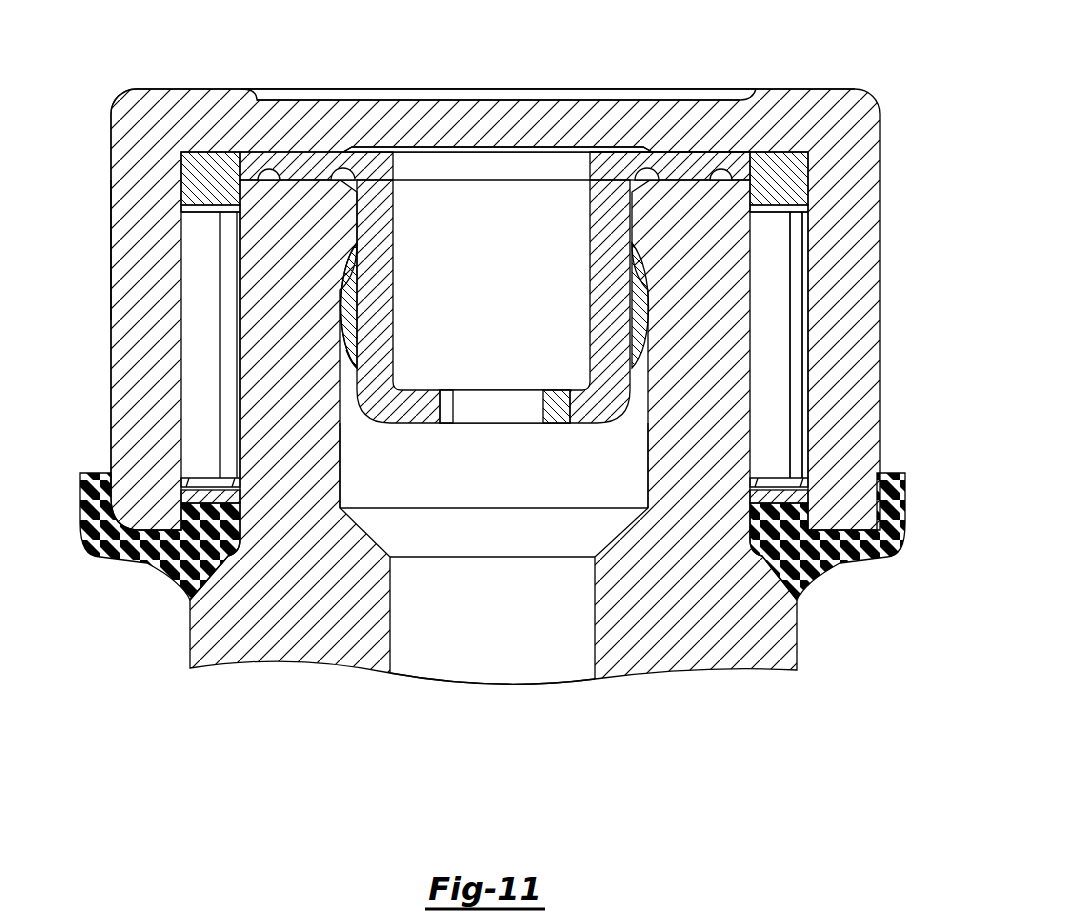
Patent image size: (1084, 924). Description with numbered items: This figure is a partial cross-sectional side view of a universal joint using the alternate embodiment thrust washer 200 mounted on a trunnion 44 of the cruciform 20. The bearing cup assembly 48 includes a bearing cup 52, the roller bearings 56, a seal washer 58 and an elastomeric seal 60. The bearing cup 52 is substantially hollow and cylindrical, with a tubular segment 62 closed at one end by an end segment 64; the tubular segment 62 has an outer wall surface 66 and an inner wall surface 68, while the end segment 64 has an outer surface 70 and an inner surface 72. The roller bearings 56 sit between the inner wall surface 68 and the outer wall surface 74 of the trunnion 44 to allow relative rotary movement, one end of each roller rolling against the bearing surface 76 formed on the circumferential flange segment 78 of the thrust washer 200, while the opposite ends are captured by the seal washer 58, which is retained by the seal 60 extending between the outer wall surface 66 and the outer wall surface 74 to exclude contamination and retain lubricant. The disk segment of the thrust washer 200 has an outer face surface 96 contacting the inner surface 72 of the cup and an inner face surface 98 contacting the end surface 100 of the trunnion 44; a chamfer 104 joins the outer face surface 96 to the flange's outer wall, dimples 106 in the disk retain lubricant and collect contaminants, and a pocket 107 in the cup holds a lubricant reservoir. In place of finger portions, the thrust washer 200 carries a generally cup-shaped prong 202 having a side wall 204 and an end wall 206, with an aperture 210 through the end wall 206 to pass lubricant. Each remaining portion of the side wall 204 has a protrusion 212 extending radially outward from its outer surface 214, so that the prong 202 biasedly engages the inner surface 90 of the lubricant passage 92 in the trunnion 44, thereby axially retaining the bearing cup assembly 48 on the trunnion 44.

The cruciform 20 is at (830, 698).
The trunnion 44 is at (660, 662).
The bearing cup assembly 48 is at (873, 93).
The bearing cup 52 is at (153, 86).
The roller bearings 56 is at (190, 272).
The seal washer 58 is at (817, 492).
The elastomeric seal 60 is at (907, 545).
The tubular segment 62 is at (120, 352).
The end segment 64 is at (773, 99).
The outer wall surface 66 is at (112, 232).
The inner wall surface 68 is at (806, 372).
The outer surface 70 is at (175, 88).
The inner surface 72 is at (683, 154).
The outer wall surface 74 is at (240, 385).
The bearing surface 76 is at (779, 214).
The circumferential flange segment 78 is at (182, 196).
The inner surface 90 is at (647, 467).
The lubricant passage 92 is at (512, 491).
The outer face surface 96 is at (217, 154).
The inner face surface 98 is at (733, 170).
The end surface 100 is at (355, 170).
The chamfer 104 is at (804, 157).
The dimples 106 is at (281, 168).
The pocket 107 is at (519, 149).
The thrust washer 200 is at (815, 206).
The prong 202 is at (352, 368).
The side wall 204 is at (380, 230).
The end wall 206 is at (571, 424).
The aperture 210 is at (446, 424).
The protrusion 212 is at (352, 290).
The outer surface 214 is at (343, 345).